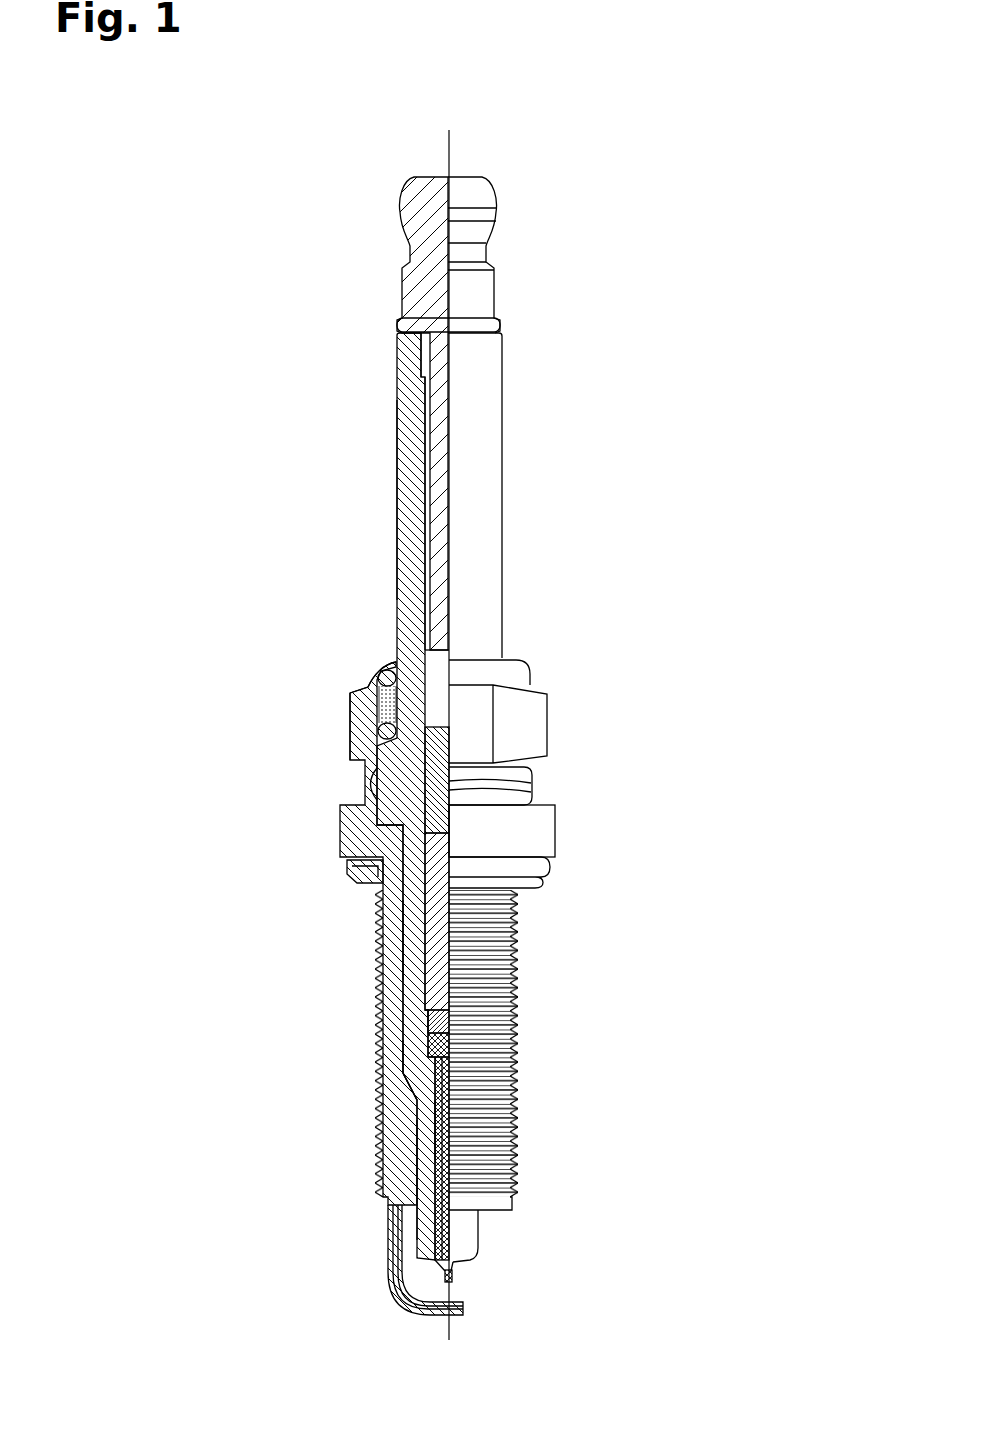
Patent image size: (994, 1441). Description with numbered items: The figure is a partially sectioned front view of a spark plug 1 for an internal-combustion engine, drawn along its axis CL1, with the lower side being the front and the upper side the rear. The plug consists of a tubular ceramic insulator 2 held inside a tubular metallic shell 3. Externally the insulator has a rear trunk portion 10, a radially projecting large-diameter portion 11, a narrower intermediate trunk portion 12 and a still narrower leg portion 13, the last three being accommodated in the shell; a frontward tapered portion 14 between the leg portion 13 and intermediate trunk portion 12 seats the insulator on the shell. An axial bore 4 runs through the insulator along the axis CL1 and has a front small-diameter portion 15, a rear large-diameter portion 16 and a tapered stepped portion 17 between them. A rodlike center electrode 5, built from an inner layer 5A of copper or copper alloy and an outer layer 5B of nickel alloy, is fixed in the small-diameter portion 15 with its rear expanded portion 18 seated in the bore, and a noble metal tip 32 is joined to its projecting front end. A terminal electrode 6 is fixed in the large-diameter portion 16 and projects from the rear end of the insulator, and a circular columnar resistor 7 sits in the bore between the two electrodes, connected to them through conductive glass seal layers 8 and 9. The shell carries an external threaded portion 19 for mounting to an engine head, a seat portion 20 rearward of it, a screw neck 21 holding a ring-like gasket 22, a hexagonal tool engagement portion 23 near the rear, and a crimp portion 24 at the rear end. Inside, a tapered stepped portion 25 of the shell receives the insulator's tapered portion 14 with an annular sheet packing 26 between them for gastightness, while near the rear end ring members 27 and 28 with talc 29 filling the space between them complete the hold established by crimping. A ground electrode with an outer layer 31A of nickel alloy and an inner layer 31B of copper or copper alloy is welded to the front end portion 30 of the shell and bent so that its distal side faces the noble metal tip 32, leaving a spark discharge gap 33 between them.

The axis CL1 is at (452, 150).
The spark plug 1 is at (621, 385).
The ceramic insulator 2 is at (527, 797).
The metallic shell 3 is at (511, 905).
The axial bore 4 is at (420, 452).
The center electrode 5 is at (542, 1152).
The inner layer 5A is at (448, 1130).
The outer layer 5B is at (456, 1160).
The terminal electrode 6 is at (494, 186).
The resistor 7 is at (442, 975).
The conductive glass seal layer 8 is at (447, 1030).
The conductive glass seal layer 9 is at (533, 784).
The rear trunk portion 10 is at (397, 507).
The large-diameter portion 11 is at (368, 780).
The intermediate trunk portion 12 is at (397, 963).
The leg portion 13 is at (417, 1155).
The tapered portion 14 is at (402, 1090).
The small-diameter portion 15 is at (432, 1130).
The large-diameter portion 16 is at (427, 937).
The stepped portion 17 is at (427, 1033).
The expanded portion 18 is at (513, 1058).
The threaded portion 19 is at (513, 1100).
The seat portion 20 is at (556, 834).
The screw neck 21 is at (517, 892).
The gasket 22 is at (348, 870).
The tool engagement portion 23 is at (550, 727).
The crimp portion 24 is at (390, 661).
The stepped portion 25 is at (428, 1057).
The sheet packing 26 is at (410, 1075).
The ring member 27 is at (378, 671).
The ring member 28 is at (378, 731).
The talc 29 is at (366, 688).
The front end portion 30 is at (365, 1260).
The outer layer 31A is at (390, 1247).
The inner layer 31B is at (393, 1268).
The noble metal tip 32 is at (455, 1278).
The spark discharge gap 33 is at (470, 1296).